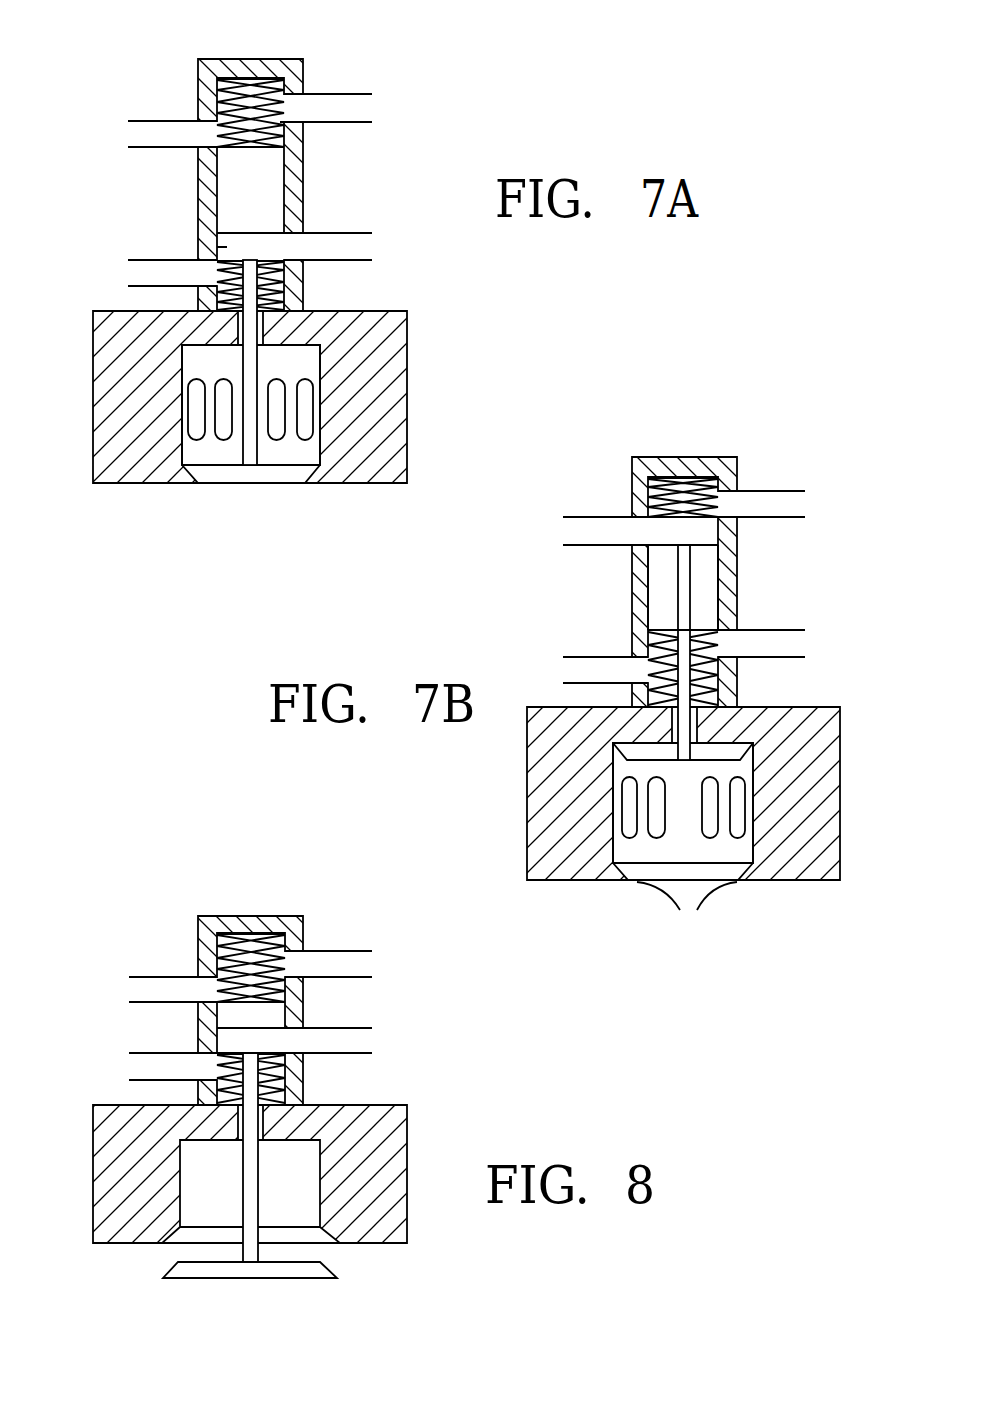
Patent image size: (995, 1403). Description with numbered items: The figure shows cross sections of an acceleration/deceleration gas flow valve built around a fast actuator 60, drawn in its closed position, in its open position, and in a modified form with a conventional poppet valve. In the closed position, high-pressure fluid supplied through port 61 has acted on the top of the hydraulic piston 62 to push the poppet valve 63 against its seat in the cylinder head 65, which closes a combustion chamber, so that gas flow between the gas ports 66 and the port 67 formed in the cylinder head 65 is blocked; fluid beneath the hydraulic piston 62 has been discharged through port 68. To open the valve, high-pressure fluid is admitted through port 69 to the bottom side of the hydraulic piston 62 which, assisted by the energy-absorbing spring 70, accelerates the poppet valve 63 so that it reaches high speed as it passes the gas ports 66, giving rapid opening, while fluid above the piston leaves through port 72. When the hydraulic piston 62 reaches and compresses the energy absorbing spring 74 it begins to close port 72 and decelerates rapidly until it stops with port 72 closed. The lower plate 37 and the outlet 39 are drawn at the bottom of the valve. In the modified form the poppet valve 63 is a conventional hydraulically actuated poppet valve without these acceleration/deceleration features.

In FIG. 7A, the valve plate 37 is at (303, 483).
In FIG. 7B, the nozzle outlet 39 is at (687, 910).
In FIG. 7A, the fast actuator 60 is at (305, 195).
In FIG. 7A, the port 61 is at (363, 108).
In FIG. 7B, the port 61 is at (797, 507).
In FIG. 8, the port 61 is at (137, 1067).
In FIG. 7A, the hydraulic piston 62 is at (227, 247).
In FIG. 7B, the hydraulic piston 62 is at (703, 540).
In FIG. 8, the hydraulic piston 62 is at (265, 1038).
In FIG. 7A, the poppet valve 63 is at (213, 477).
In FIG. 7B, the poppet valve 63 is at (637, 752).
In FIG. 8, the poppet valve 63 is at (323, 1270).
In FIG. 7A, the cylinder head 65 is at (133, 370).
In FIG. 8, the cylinder head 65 is at (153, 1158).
In FIG. 7A, the gas ports 66 is at (347, 363).
In FIG. 7A, the port 67 is at (247, 487).
In FIG. 8, the port 67 is at (190, 1238).
In FIG. 7A, the port 68 is at (363, 247).
In FIG. 7B, the port 68 is at (795, 645).
In FIG. 8, the port 68 is at (137, 990).
In FIG. 7A, the port 69 is at (137, 277).
In FIG. 7B, the port 69 is at (572, 672).
In FIG. 8, the port 69 is at (368, 965).
In FIG. 7A, the energy-absorbing spring 70 is at (303, 300).
In FIG. 7A, the port 72 is at (137, 135).
In FIG. 7B, the port 72 is at (570, 535).
In FIG. 8, the port 72 is at (367, 1042).
In FIG. 7A, the energy absorbing spring 74 is at (250, 90).